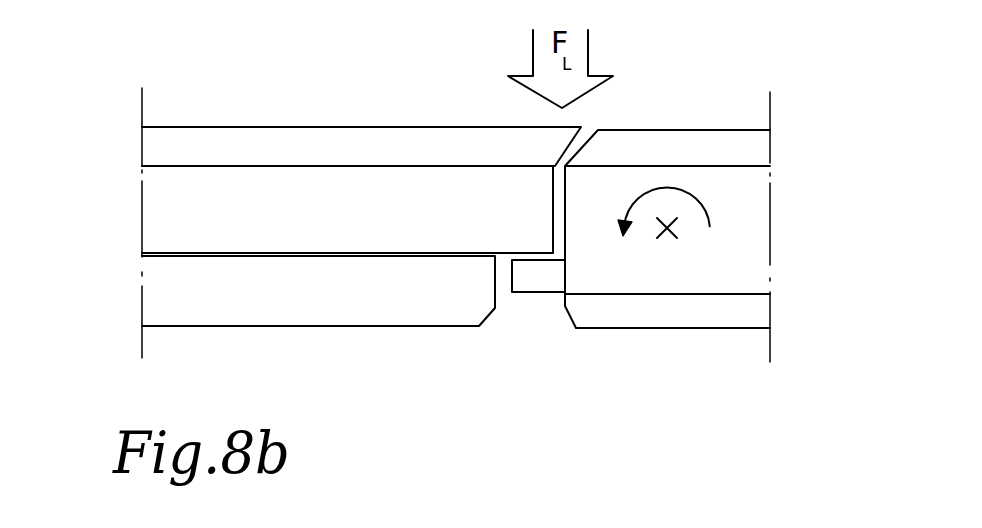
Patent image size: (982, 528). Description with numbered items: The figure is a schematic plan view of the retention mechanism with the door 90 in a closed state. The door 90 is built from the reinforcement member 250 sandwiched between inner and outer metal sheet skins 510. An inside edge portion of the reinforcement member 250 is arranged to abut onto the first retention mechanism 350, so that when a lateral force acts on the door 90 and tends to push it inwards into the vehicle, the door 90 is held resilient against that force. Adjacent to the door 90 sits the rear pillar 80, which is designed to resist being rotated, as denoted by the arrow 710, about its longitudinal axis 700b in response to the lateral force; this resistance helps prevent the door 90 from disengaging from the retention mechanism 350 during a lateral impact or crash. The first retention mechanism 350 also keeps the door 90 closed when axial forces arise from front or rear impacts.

The inner and outer metal sheet skins 510 is at (290, 147).
The reinforcement member 250 is at (170, 205).
The first retention mechanism 350 is at (535, 278).
The rear pillar 80 is at (727, 242).
The door 90 is at (412, 108).
The arrow 710 is at (655, 188).
The longitudinal axis 700b is at (670, 236).